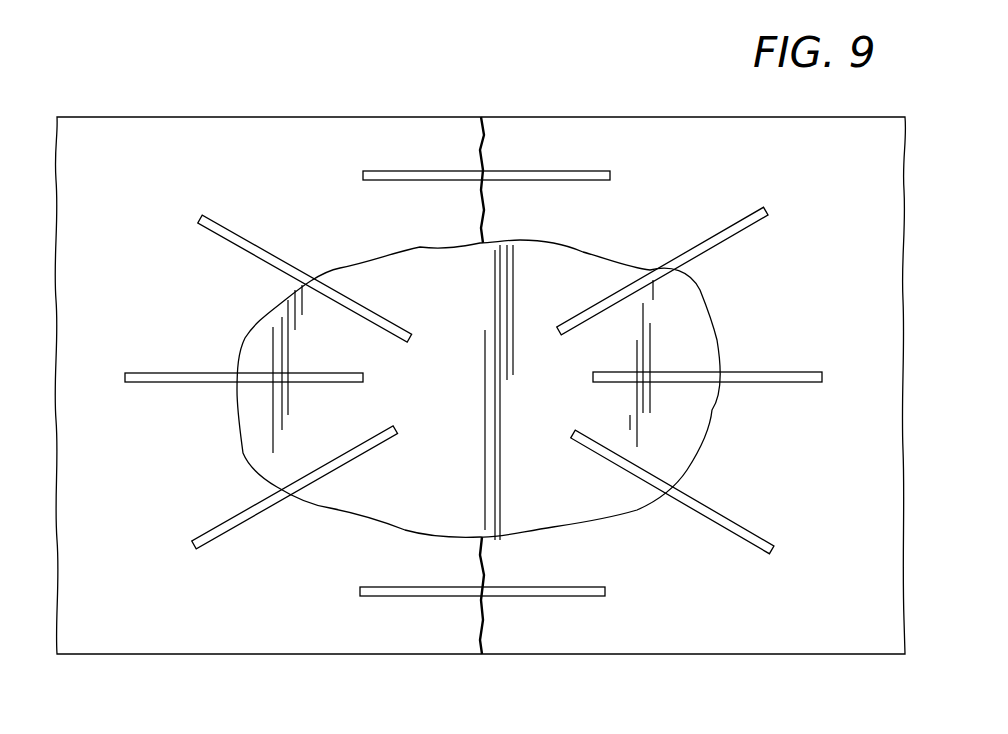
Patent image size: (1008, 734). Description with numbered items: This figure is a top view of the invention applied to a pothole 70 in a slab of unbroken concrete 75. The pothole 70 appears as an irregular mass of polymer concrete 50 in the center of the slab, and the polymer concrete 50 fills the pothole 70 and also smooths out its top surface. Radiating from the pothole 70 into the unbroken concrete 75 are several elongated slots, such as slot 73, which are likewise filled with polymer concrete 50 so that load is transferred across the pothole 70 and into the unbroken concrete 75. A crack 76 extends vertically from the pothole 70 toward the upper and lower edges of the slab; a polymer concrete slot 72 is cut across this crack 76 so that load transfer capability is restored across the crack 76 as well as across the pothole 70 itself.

The polymer concrete 50 is at (605, 272).
The pothole 70 is at (255, 315).
The slot 72 is at (545, 181).
The slot 73 is at (743, 216).
The unbroken concrete 75 is at (697, 126).
The crack 76 is at (484, 137).